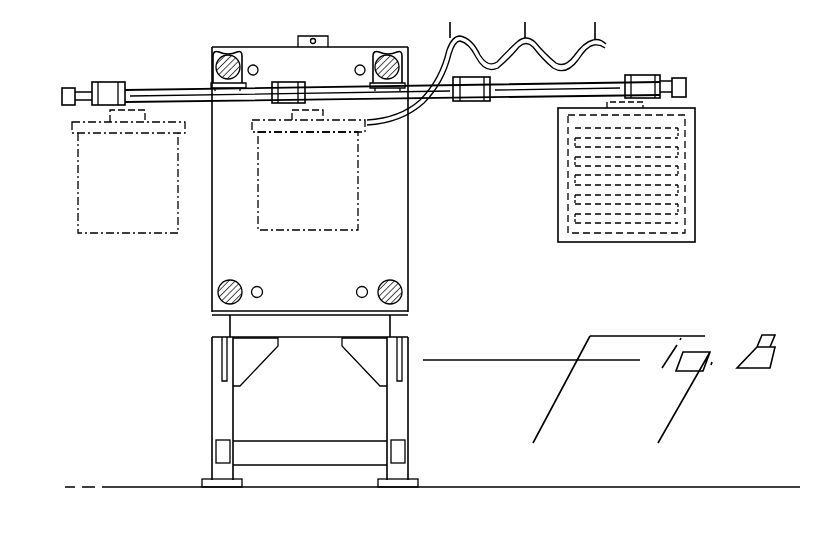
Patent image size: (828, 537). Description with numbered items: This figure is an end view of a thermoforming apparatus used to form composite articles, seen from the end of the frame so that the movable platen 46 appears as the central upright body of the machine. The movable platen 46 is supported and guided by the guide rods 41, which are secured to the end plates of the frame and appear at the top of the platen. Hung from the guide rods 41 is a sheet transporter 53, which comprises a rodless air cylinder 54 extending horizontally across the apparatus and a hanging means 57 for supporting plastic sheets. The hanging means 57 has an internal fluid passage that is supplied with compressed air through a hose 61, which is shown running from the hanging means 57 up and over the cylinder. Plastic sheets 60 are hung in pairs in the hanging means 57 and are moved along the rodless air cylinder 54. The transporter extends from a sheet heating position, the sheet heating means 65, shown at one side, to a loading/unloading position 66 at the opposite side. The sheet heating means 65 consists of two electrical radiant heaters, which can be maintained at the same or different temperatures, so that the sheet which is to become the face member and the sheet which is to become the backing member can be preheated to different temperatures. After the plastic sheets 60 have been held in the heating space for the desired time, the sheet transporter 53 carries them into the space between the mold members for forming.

The guide rods 41 is at (228, 58).
The movable platen 46 is at (245, 209).
The sheet transporter 53 is at (87, 73).
The rodless air cylinder 54 is at (173, 89).
The hanging means 57 is at (251, 124).
The plastic sheets 60 is at (325, 184).
The hose 61 is at (516, 47).
The sheet heating means 65 is at (639, 243).
The loading/unloading position 66 is at (140, 187).